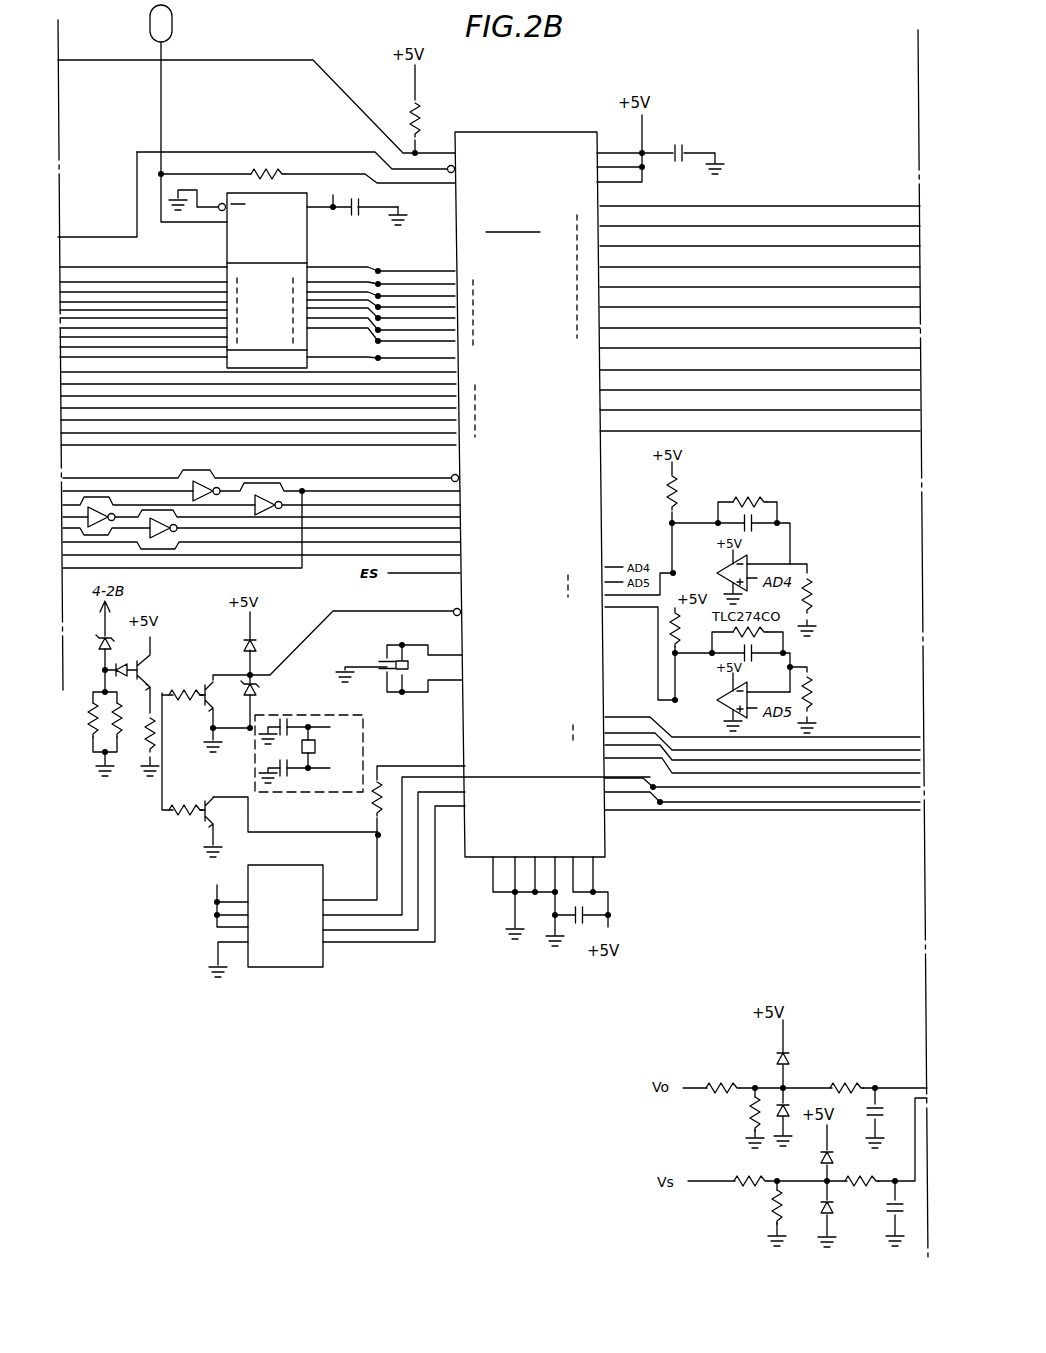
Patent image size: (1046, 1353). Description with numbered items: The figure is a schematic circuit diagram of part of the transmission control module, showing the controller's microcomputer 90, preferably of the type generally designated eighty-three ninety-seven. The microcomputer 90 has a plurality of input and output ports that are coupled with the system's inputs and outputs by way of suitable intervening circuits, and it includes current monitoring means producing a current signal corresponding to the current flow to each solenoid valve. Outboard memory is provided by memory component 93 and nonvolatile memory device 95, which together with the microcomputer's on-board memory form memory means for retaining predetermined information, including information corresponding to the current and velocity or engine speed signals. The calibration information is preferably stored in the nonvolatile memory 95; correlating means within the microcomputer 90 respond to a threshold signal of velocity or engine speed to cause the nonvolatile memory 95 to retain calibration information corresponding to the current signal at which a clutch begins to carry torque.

The microcomputer 90 is at (538, 131).
The memory component 93 is at (307, 247).
The nonvolatile memory device 95 is at (323, 967).